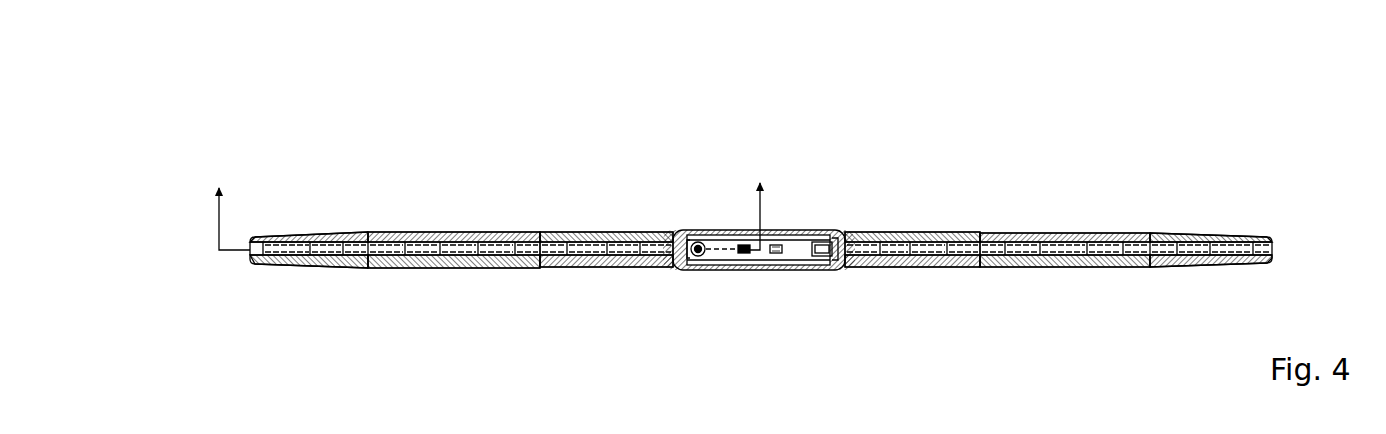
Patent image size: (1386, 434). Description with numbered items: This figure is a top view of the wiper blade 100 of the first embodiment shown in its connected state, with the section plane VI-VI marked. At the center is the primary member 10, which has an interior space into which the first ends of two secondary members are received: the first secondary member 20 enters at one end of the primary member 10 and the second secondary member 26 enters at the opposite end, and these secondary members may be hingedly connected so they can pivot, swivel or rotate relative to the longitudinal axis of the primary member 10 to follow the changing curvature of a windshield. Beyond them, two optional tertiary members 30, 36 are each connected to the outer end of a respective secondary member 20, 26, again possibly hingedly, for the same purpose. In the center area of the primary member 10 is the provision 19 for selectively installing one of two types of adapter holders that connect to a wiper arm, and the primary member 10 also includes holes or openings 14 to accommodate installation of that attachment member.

The wiper blade 100 is at (230, 115).
The primary member 10 is at (738, 230).
The holes/openings 14 is at (702, 233).
The provision 19 is at (808, 232).
The first secondary member 20 is at (436, 232).
The second secondary member 26 is at (1028, 233).
The tertiary member 30 is at (292, 233).
The tertiary member 36 is at (1203, 233).